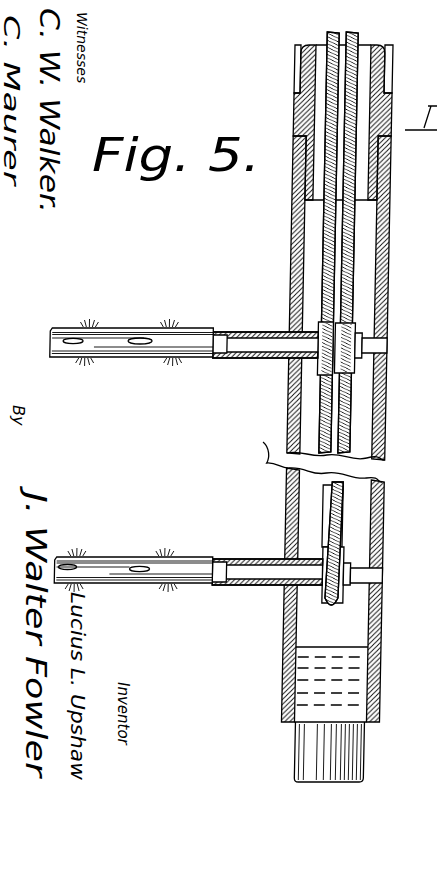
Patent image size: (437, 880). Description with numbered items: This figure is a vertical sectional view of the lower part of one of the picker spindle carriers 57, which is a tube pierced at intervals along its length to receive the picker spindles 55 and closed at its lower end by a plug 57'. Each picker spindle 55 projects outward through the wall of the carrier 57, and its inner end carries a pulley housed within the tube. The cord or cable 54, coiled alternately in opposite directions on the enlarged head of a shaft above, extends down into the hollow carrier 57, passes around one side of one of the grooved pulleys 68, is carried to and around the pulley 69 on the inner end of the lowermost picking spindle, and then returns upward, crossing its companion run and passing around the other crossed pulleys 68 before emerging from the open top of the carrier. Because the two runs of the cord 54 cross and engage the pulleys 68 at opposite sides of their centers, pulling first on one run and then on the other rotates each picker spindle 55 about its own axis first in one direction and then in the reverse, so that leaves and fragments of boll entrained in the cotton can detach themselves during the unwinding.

The cord or cable 54 is at (350, 238).
The picker spindle 55 is at (144, 332).
The picker spindle carrier 57 is at (318, 263).
The plug 57' is at (304, 625).
The grooved pulley 68 is at (326, 324).
The pulley 69 is at (341, 605).